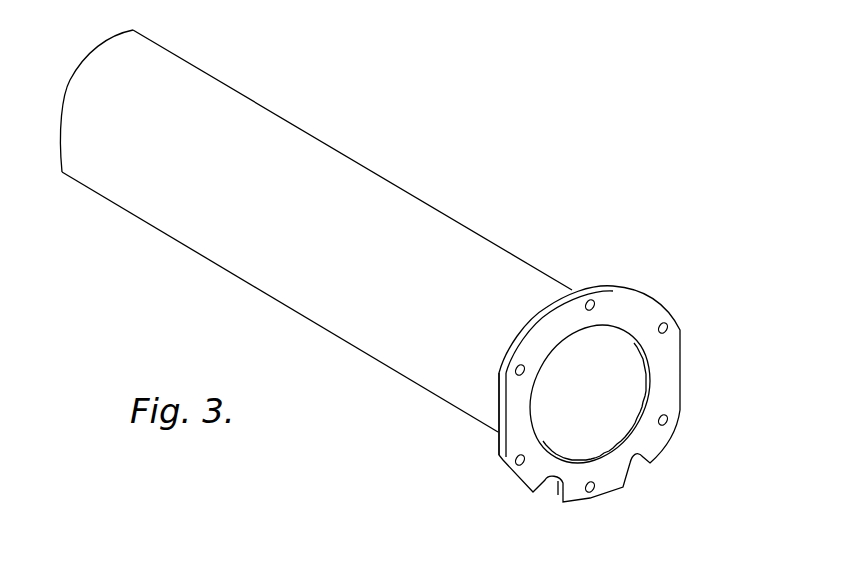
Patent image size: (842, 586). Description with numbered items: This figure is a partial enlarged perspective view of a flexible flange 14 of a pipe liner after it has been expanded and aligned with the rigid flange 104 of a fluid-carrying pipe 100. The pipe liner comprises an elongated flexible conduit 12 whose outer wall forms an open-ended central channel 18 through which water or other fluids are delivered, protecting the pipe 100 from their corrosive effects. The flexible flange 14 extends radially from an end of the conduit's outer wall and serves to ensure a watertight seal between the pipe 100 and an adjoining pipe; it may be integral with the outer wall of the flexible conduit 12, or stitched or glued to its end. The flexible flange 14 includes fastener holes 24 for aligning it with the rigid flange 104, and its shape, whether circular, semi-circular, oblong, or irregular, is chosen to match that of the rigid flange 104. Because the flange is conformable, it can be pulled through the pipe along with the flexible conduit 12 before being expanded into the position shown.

The fluid-carrying pipe 100 is at (177, 192).
The flexible conduit 12 is at (616, 298).
The flexible flange 14 is at (650, 315).
The central channel 18 is at (617, 415).
The fastener holes 24 is at (590, 494).
The rigid flange 104 is at (498, 432).